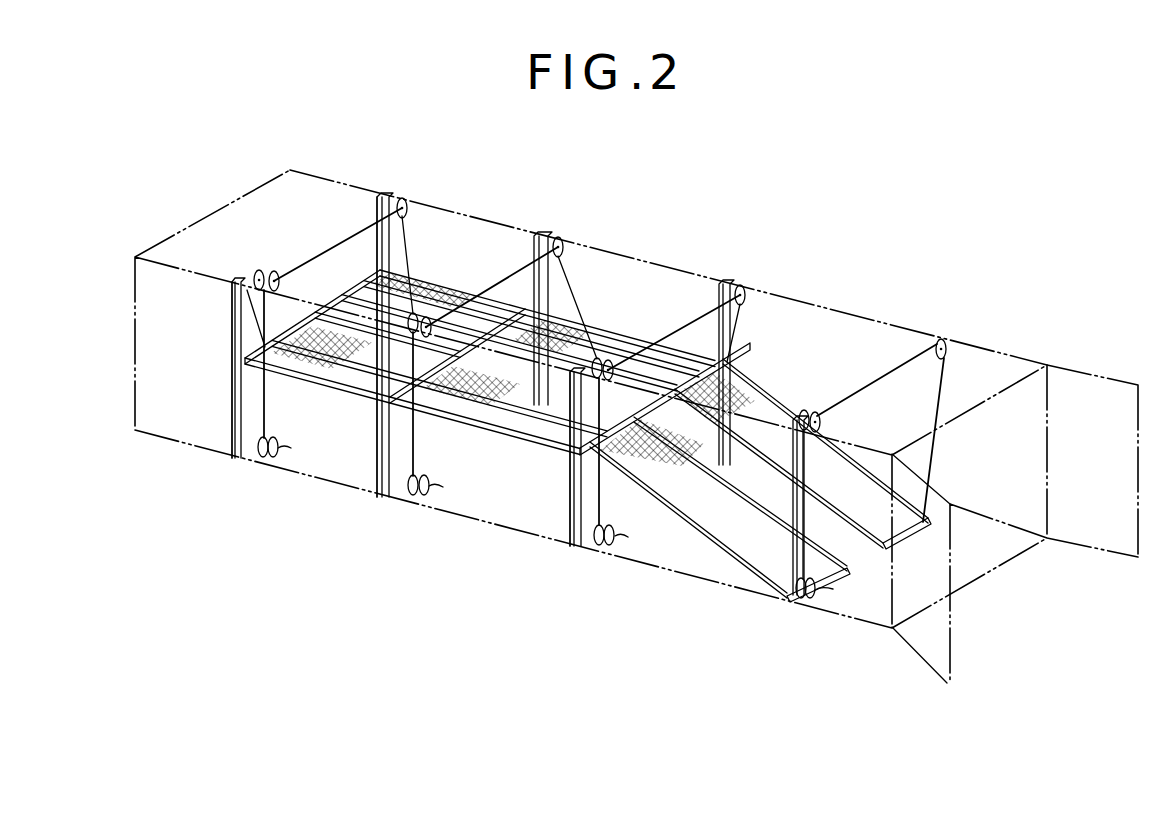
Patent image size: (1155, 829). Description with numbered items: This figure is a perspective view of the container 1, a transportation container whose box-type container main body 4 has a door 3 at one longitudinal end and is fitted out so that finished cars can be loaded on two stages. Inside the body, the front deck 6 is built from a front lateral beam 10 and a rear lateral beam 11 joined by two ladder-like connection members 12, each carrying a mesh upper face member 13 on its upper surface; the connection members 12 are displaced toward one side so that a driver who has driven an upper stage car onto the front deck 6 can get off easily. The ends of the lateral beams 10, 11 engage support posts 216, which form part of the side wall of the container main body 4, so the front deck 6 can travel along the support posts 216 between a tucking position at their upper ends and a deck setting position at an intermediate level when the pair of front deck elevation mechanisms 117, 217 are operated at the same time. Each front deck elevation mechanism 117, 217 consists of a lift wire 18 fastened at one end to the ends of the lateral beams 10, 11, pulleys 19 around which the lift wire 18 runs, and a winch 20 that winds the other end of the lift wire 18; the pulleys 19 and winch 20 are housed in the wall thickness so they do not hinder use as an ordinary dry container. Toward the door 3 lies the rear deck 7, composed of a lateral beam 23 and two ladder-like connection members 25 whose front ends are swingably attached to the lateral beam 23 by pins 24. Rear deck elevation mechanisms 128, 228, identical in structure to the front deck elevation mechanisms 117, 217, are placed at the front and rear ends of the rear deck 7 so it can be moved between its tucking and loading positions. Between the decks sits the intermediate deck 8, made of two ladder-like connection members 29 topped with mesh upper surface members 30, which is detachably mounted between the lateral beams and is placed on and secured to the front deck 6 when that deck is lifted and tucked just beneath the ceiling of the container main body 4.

The container 1 is at (707, 233).
The door 3 is at (1093, 383).
The container main body 4 is at (198, 218).
The front deck 6 is at (385, 332).
The rear deck 7 is at (755, 472).
The intermediate deck 8 is at (552, 370).
The front lateral beam 10 is at (333, 300).
The rear lateral beam 11 is at (428, 408).
The ladder-like connection members 12 is at (497, 311).
The upper face member 13 is at (403, 287).
The lift wire 18 is at (505, 266).
The pulleys 19 is at (273, 272).
The winch 20 is at (272, 456).
The lateral beam 23 is at (660, 397).
The pins 24 is at (599, 468).
The ladder-like connection members 25 is at (698, 522).
The ladder-like connection members 29 is at (630, 340).
The upper surface members 30 is at (562, 322).
The front deck elevation mechanism 117 is at (258, 423).
The rear deck elevation mechanism 128 is at (593, 513).
The support post 216 is at (383, 197).
The front deck elevation mechanism 217 is at (413, 465).
The rear deck elevation mechanism 228 is at (803, 603).